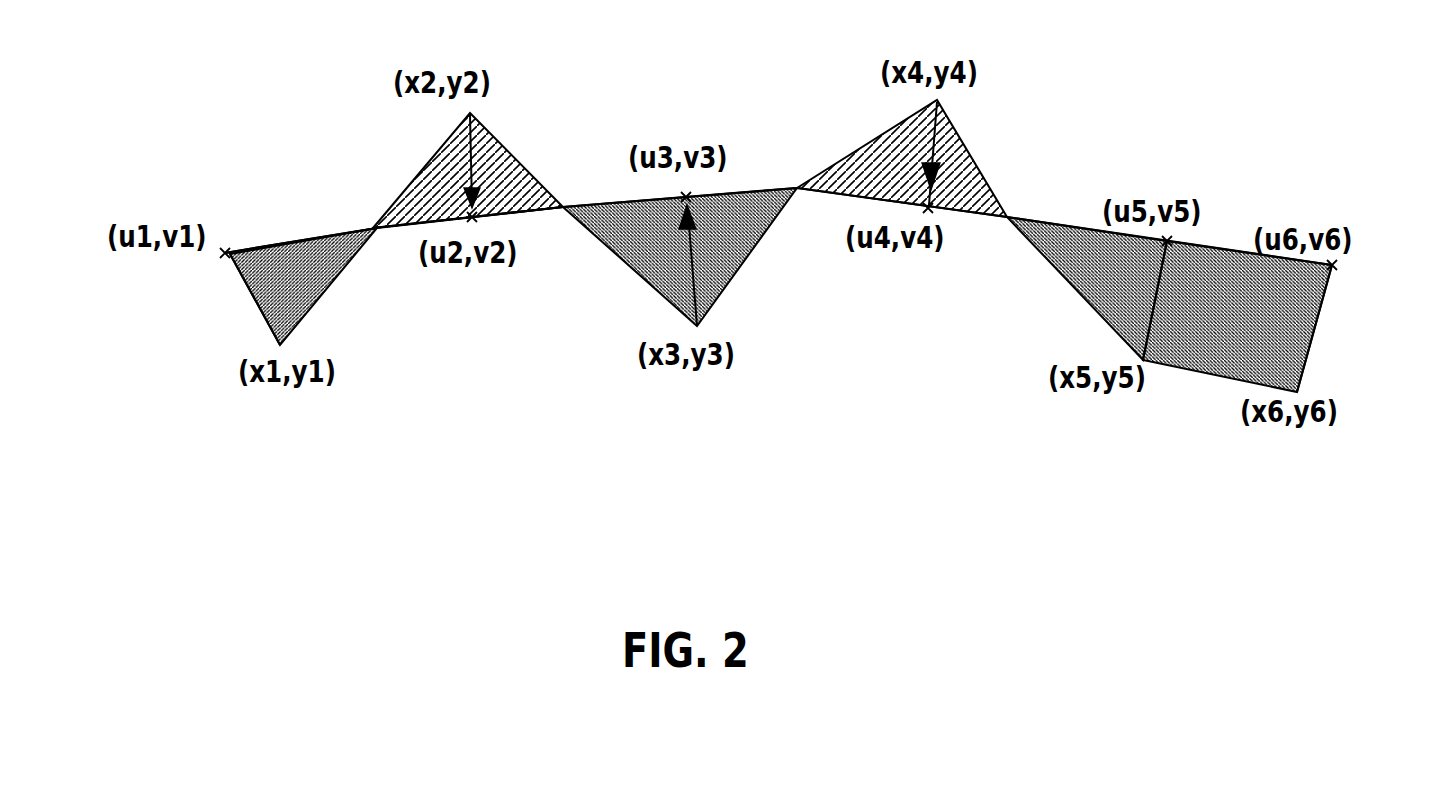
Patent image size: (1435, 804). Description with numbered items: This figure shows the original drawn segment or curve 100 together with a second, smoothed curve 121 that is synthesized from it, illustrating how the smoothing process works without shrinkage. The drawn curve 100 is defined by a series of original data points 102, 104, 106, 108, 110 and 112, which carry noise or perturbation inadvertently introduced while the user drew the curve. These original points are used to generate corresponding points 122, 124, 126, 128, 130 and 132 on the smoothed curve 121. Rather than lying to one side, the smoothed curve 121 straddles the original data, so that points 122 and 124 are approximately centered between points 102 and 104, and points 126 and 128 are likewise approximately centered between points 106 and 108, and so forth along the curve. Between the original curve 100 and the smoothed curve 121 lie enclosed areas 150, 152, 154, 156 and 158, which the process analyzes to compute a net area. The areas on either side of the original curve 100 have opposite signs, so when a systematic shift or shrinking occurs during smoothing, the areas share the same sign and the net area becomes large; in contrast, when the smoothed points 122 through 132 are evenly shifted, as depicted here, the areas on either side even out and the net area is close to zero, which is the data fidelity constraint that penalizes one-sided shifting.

The drawn segment or curve 100 is at (778, 301).
The point 102 is at (268, 327).
The point 104 is at (450, 129).
The point 106 is at (683, 291).
The point 108 is at (940, 120).
The point 110 is at (1143, 361).
The point 112 is at (1280, 320).
The smoothed curve 121 is at (415, 222).
The point 122 is at (232, 253).
The point 124 is at (487, 217).
The point 126 is at (688, 197).
The point 128 is at (929, 208).
The point 130 is at (1168, 242).
The point 132 is at (1333, 265).
The area 150 is at (267, 320).
The area 152 is at (425, 193).
The area 154 is at (652, 255).
The area 156 is at (967, 187).
The area 158 is at (1308, 342).